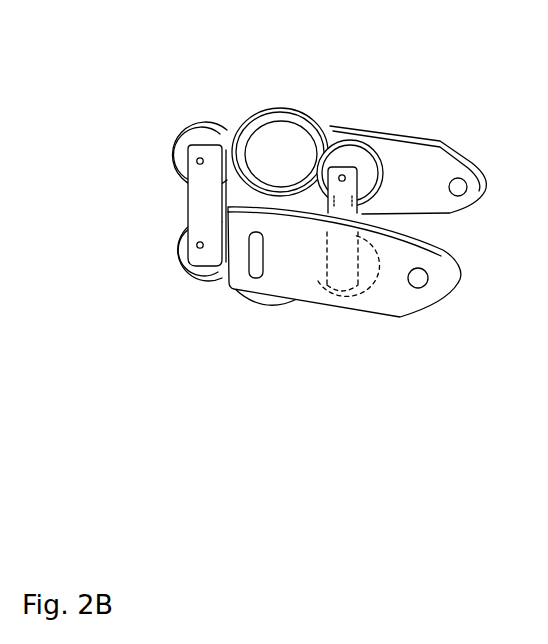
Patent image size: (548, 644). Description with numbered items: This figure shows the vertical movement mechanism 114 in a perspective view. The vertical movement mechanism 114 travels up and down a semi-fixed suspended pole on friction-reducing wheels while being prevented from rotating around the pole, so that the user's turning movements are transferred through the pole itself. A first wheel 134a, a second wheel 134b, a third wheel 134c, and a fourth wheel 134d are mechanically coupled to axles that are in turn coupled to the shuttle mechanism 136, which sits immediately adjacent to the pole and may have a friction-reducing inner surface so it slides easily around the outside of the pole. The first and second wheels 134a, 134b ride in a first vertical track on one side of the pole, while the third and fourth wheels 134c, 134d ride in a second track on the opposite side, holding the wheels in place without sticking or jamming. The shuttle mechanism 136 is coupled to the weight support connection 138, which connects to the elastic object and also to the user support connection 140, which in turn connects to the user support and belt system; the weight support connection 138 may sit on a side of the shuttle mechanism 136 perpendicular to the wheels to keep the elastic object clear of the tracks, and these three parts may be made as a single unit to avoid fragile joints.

The vertical movement mechanism 114 is at (246, 112).
The first wheel 134a is at (176, 136).
The second wheel 134b is at (173, 268).
The third wheel 134c is at (370, 130).
The fourth wheel 134d is at (350, 290).
The shuttle mechanism 136 is at (190, 198).
The weight support connection 138 is at (253, 282).
The user support connection 140 is at (474, 195).